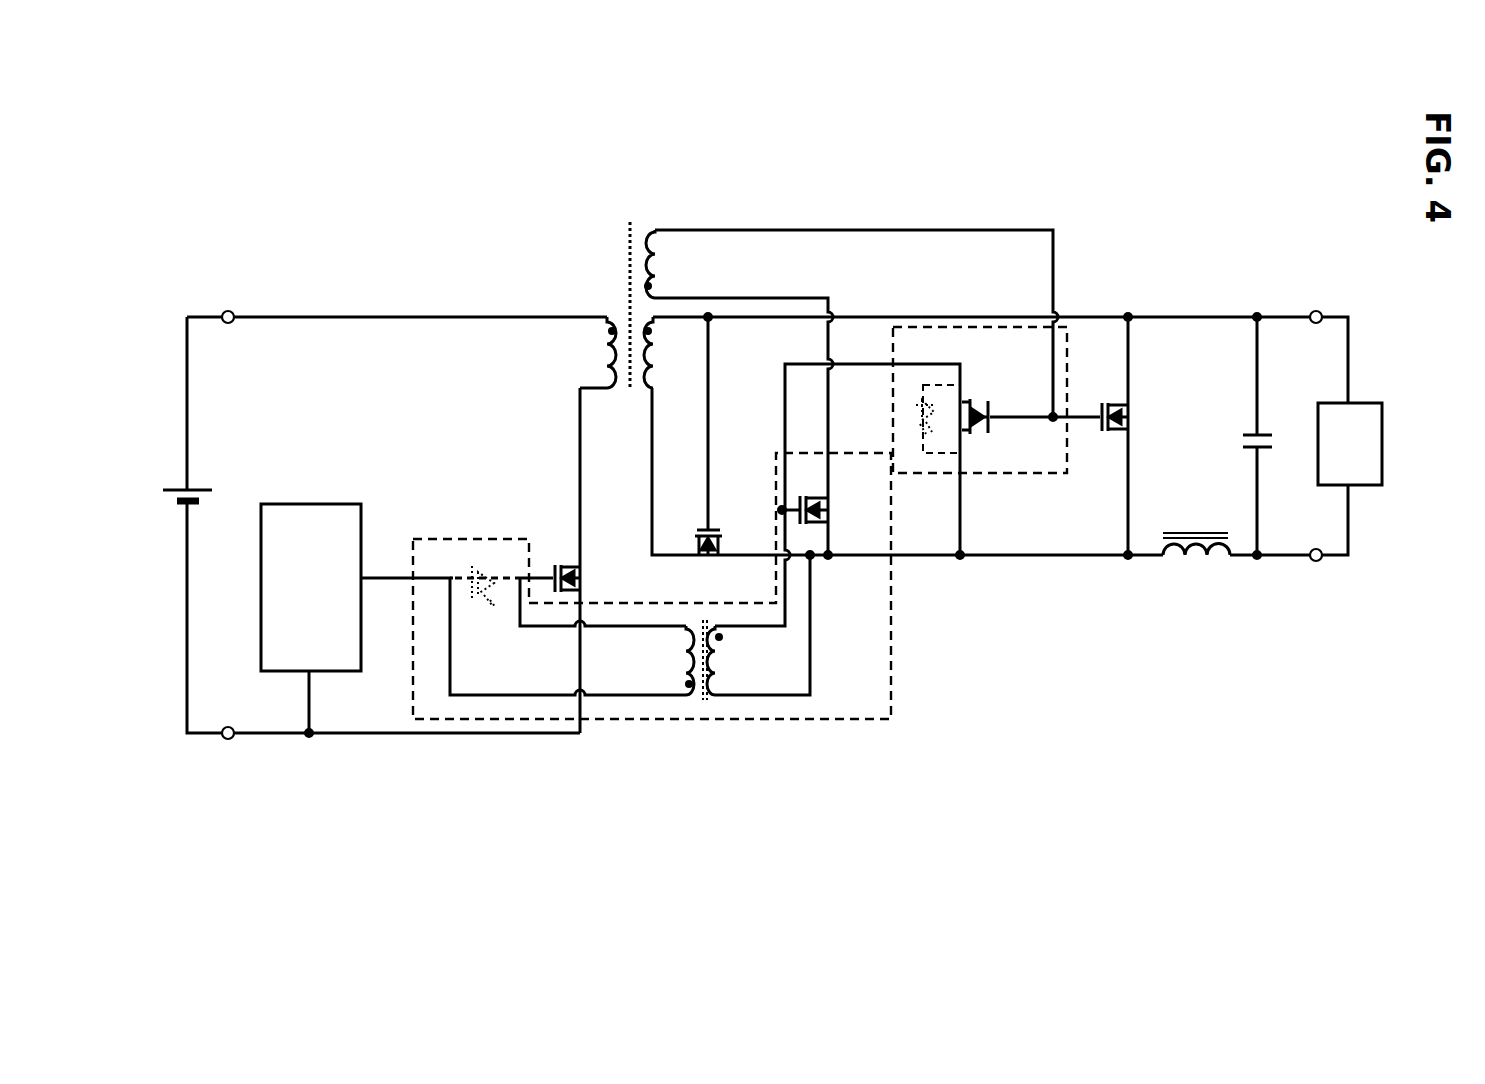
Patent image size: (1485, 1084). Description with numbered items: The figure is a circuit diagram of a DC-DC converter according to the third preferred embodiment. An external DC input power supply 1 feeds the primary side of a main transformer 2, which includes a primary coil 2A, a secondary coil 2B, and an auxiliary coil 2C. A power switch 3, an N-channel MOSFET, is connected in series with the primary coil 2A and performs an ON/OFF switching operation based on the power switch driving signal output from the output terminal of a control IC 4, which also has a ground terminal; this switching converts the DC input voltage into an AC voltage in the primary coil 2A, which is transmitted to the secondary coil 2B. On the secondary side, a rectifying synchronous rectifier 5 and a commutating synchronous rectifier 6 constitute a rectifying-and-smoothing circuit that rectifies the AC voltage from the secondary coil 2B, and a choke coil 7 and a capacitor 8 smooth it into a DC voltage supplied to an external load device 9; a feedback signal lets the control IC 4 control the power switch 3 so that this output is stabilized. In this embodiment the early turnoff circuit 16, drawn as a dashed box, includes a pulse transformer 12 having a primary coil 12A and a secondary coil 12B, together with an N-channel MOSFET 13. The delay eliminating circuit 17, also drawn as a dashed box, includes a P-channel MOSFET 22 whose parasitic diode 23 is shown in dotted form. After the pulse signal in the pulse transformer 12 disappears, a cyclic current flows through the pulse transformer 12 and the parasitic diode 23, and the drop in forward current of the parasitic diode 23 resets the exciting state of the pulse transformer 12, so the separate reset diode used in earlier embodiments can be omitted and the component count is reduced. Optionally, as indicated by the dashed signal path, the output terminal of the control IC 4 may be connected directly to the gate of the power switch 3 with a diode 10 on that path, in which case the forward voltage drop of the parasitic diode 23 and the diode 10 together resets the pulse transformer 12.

The DC input power supply 1 is at (178, 490).
The main transformer 2 is at (630, 222).
The primary coil 2A is at (612, 354).
The secondary coil 2B is at (650, 354).
The auxiliary coil 2C is at (650, 264).
The power switch 3 is at (583, 580).
The control IC 4 is at (324, 503).
The rectifying synchronous rectifier 5 is at (705, 528).
The commutating synchronous rectifier 6 is at (1130, 419).
The choke coil 7 is at (1180, 532).
The capacitor 8 is at (1254, 434).
The load device 9 is at (1362, 402).
The diode 10 is at (484, 596).
The pulse transformer 12 is at (702, 621).
The primary coil 12A is at (686, 662).
The secondary coil 12B is at (715, 660).
The N-channel MOSFET 13 is at (831, 511).
The early turnoff circuit 16 is at (456, 538).
The delay eliminating circuit 17 is at (978, 476).
The P-channel MOSFET 22 is at (990, 412).
The parasitic diode 23 is at (908, 416).